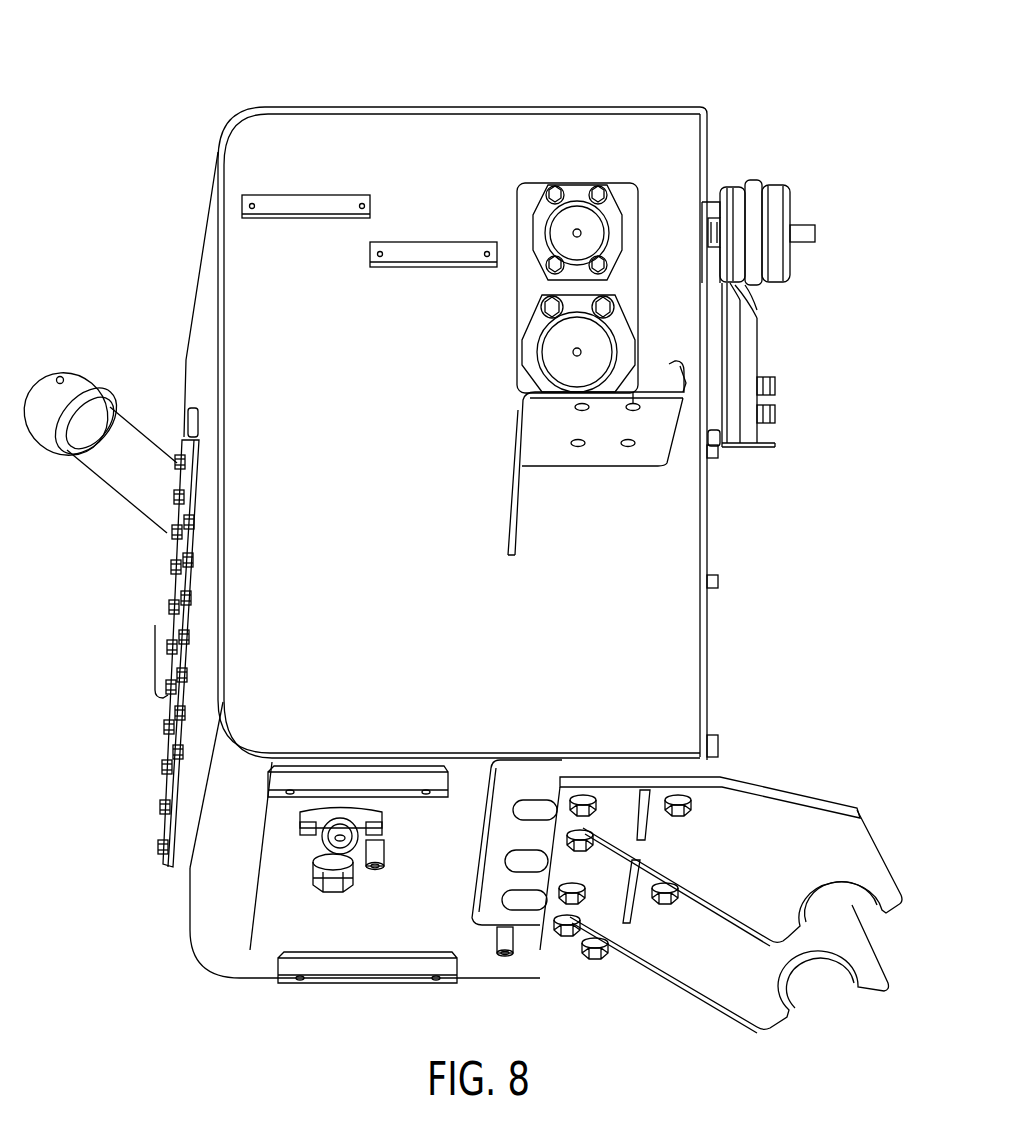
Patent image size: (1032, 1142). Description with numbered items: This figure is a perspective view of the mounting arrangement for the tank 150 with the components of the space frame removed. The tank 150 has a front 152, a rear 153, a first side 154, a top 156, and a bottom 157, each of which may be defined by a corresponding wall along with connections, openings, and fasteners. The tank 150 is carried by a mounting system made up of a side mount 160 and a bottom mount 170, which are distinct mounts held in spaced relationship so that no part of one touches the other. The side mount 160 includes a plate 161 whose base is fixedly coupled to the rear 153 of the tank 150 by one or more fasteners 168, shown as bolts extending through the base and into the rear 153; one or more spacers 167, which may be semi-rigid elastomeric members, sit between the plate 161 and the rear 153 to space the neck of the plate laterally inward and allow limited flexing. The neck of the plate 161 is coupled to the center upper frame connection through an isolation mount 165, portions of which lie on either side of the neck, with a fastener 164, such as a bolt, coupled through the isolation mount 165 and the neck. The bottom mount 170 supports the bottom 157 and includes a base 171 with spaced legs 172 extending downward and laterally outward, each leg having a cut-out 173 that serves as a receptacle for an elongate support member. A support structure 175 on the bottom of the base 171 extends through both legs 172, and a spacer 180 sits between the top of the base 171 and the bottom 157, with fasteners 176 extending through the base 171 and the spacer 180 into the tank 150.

The tank 150 is at (203, 77).
The front 152 is at (192, 352).
The rear 153 is at (712, 545).
The first side 154 is at (670, 642).
The top 156 is at (505, 105).
The bottom 157 is at (270, 957).
The side mount 160 is at (801, 270).
The plate 161 is at (752, 338).
The fastener 164 is at (805, 235).
The isolation mount 165 is at (780, 185).
The spacer 167 is at (720, 442).
The fastener 168 is at (780, 402).
The bottom mount 170 is at (732, 900).
The base 171 is at (765, 795).
The legs 172 is at (860, 845).
The cut-out 173 is at (873, 907).
The support structure 175 is at (632, 913).
The fastener 176 is at (557, 947).
The spacer 180 is at (688, 770).